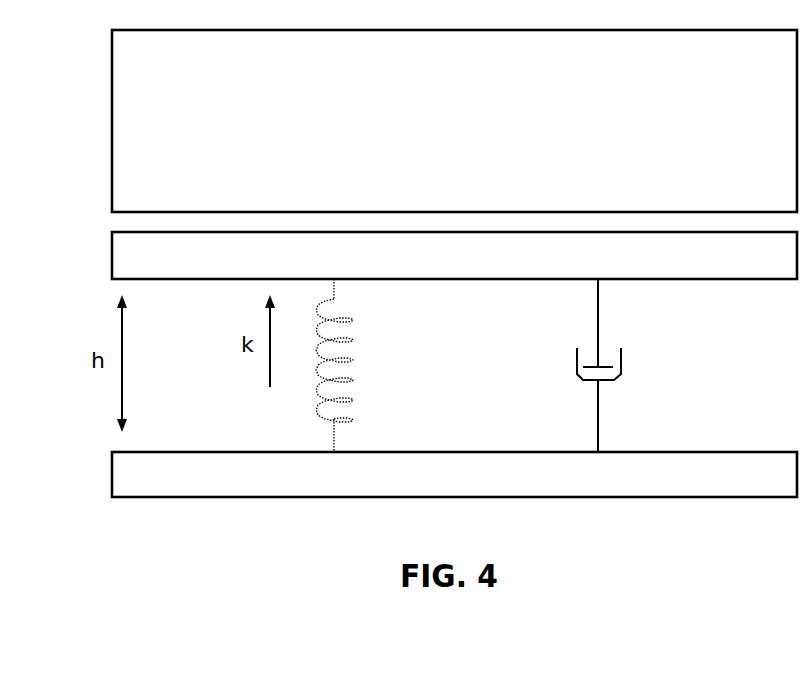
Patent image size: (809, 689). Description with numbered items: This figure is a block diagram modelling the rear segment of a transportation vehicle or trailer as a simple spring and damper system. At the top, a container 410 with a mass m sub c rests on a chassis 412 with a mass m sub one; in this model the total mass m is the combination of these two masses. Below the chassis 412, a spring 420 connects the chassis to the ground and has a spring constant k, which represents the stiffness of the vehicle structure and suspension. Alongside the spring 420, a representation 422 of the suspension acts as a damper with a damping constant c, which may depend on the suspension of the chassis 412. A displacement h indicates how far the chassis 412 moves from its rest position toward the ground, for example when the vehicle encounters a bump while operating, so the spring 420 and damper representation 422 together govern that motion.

The container 410 is at (136, 120).
The chassis 412 is at (136, 258).
The spring 420 is at (343, 367).
The representation of the suspension 422 is at (619, 365).